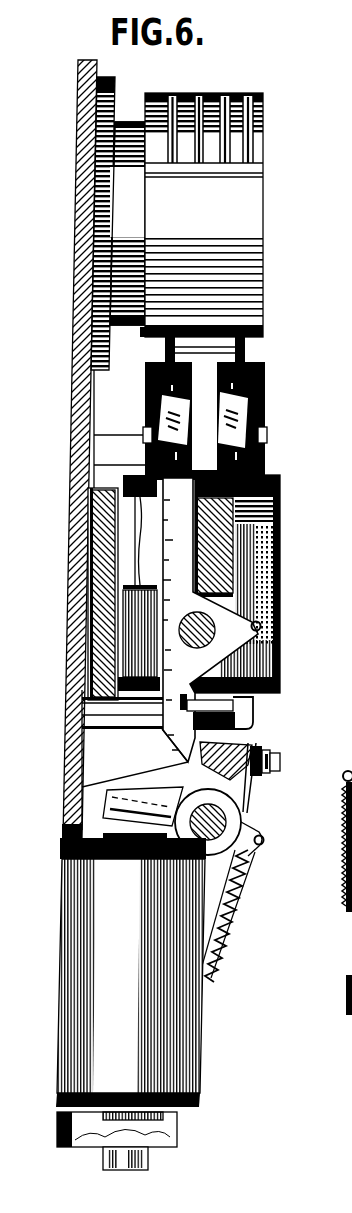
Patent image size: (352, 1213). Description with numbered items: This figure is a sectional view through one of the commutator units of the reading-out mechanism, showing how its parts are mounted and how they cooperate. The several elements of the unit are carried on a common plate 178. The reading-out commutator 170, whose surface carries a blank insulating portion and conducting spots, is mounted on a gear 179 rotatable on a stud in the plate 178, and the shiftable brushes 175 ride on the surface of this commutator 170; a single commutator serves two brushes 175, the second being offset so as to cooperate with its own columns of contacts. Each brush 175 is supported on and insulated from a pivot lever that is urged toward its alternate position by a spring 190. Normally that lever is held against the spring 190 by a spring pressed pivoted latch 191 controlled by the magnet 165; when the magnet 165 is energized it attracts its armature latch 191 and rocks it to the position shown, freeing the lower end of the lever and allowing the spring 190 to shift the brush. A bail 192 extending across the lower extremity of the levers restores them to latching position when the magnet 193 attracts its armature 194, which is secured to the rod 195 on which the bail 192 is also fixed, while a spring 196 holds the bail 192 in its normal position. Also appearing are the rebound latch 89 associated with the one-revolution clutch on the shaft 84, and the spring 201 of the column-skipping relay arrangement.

The common plate 178 is at (78, 107).
The gear 179 is at (97, 155).
The reading-out commutator 170 is at (250, 197).
The shiftable brush 175 is at (245, 349).
The rebound latch 89 is at (172, 538).
The spring 190 is at (266, 584).
The magnet 165 is at (250, 658).
The spring pressed pivoted latch 191 is at (240, 711).
The bail 192 is at (258, 790).
The rod 195 is at (213, 818).
The armature 194 is at (103, 813).
The spring 196 is at (235, 928).
The magnet 193 is at (76, 988).
The shaft 84 is at (346, 822).
The spring 201 is at (346, 845).